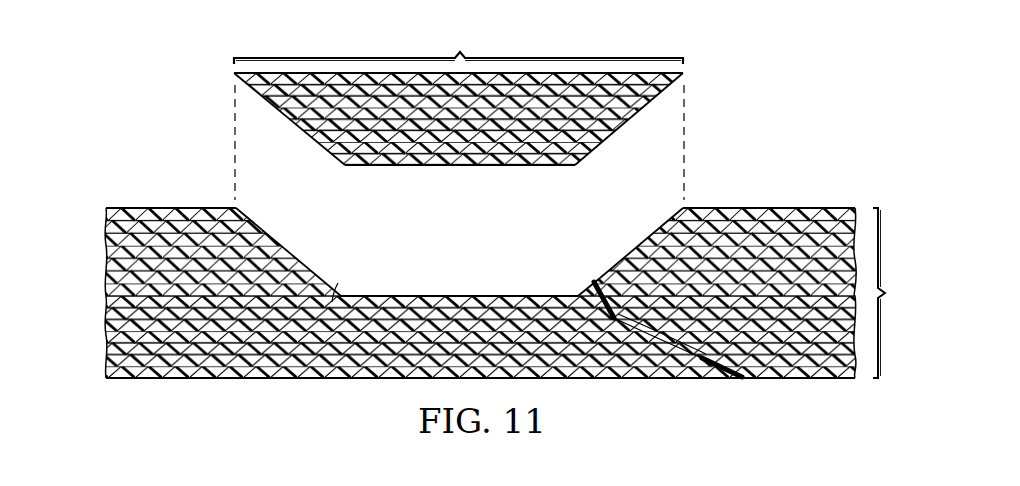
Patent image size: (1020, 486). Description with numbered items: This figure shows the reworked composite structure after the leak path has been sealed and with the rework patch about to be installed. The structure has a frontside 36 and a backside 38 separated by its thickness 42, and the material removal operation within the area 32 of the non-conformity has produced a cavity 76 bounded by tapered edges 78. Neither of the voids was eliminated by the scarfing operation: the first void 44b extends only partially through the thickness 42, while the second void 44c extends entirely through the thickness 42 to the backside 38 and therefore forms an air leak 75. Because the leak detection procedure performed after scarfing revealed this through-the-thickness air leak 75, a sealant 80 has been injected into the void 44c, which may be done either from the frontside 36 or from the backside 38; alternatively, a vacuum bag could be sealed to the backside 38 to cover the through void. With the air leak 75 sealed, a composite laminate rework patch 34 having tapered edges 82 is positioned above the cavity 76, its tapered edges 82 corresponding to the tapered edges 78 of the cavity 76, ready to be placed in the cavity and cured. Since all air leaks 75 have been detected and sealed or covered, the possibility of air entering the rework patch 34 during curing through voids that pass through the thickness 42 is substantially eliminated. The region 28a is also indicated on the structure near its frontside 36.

The area 32 is at (459, 113).
The frontside 36 is at (156, 204).
The tapered edges 82 is at (305, 139).
The rework patch 34 is at (395, 167).
The tapered edges 78 is at (303, 247).
The cavity 76 is at (473, 269).
The first void 44b is at (338, 283).
The second void 44c is at (688, 348).
The air leak 75 is at (578, 279).
The sealant 80 is at (596, 282).
The outer skin surface 28a is at (106, 350).
The backside 38 is at (265, 385).
The thickness 42 is at (895, 293).